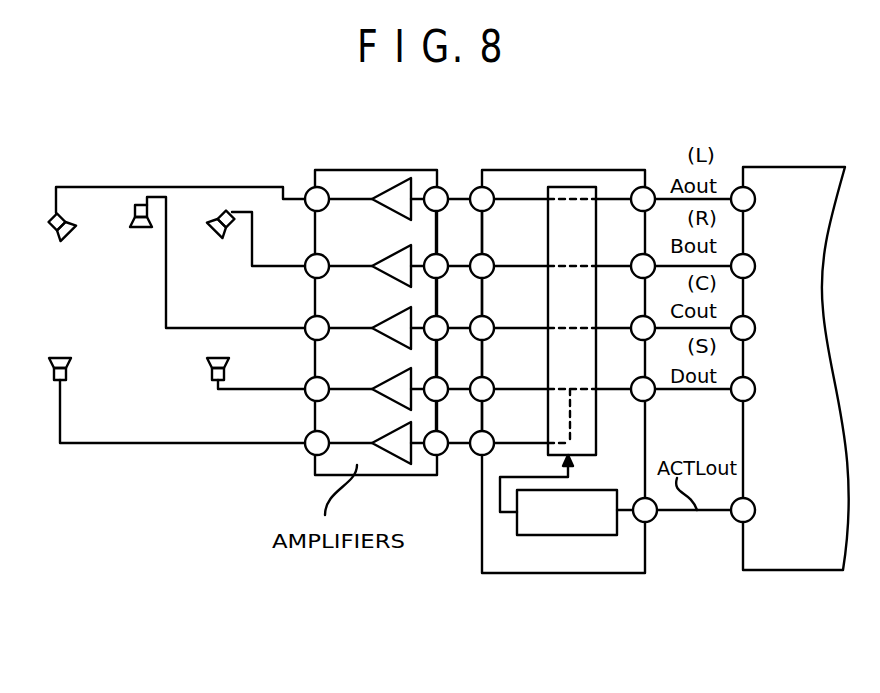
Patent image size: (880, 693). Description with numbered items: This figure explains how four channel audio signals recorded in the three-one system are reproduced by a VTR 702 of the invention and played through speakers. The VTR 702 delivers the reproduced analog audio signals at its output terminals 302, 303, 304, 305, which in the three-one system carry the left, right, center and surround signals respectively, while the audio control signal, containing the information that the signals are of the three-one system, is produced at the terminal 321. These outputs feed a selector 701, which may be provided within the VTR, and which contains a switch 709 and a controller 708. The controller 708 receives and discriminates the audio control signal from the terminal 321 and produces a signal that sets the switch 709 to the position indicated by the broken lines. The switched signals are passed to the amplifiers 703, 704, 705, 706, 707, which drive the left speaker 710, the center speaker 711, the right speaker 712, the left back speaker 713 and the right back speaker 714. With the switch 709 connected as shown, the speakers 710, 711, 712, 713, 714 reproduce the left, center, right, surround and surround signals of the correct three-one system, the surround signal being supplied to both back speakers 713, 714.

The selector 701 is at (557, 567).
The VTR 702 is at (795, 562).
The amplifier 703 is at (390, 189).
The amplifier 704 is at (378, 260).
The amplifier 705 is at (382, 320).
The amplifier 706 is at (382, 382).
The amplifier 707 is at (382, 438).
The controller 708 is at (530, 535).
The switch 709 is at (573, 187).
The left speaker 710 is at (50, 235).
The center speaker 711 is at (132, 228).
The right speaker 712 is at (212, 240).
The left back speaker 713 is at (66, 375).
The right back speaker 714 is at (205, 366).
The output terminal 302 is at (755, 197).
The output terminal 303 is at (752, 258).
The output terminal 304 is at (752, 318).
The output terminal 305 is at (752, 380).
The terminal 321 is at (757, 503).